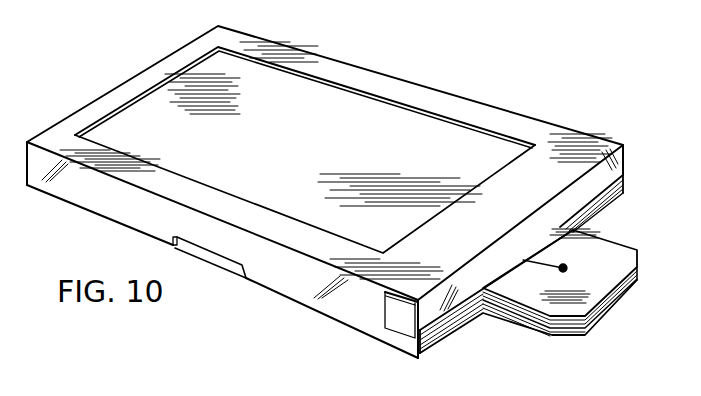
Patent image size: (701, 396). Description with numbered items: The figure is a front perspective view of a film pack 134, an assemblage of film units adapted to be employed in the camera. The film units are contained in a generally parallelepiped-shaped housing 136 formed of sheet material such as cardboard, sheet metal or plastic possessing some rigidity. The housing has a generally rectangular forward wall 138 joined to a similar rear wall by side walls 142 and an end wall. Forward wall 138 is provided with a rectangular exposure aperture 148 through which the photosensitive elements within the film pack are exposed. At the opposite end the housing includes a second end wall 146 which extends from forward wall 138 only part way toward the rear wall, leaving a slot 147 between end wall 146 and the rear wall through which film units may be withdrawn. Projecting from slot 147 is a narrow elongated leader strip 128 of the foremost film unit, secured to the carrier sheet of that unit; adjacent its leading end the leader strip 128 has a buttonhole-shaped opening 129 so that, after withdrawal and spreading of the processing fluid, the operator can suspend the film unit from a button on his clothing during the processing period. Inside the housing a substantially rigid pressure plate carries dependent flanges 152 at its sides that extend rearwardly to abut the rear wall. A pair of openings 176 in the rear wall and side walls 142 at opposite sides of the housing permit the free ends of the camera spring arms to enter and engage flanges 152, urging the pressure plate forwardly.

The film pack 134 is at (408, 65).
The housing 136 is at (492, 116).
The exposure aperture 148 is at (431, 114).
The forward wall 138 is at (453, 236).
The side wall 142 is at (362, 318).
The flange 152 is at (221, 258).
The opening 176 is at (173, 245).
The second end wall 146 is at (469, 289).
The slot 147 is at (440, 336).
The leader strip 128 is at (618, 267).
The buttonhole-shaped opening 129 is at (566, 266).